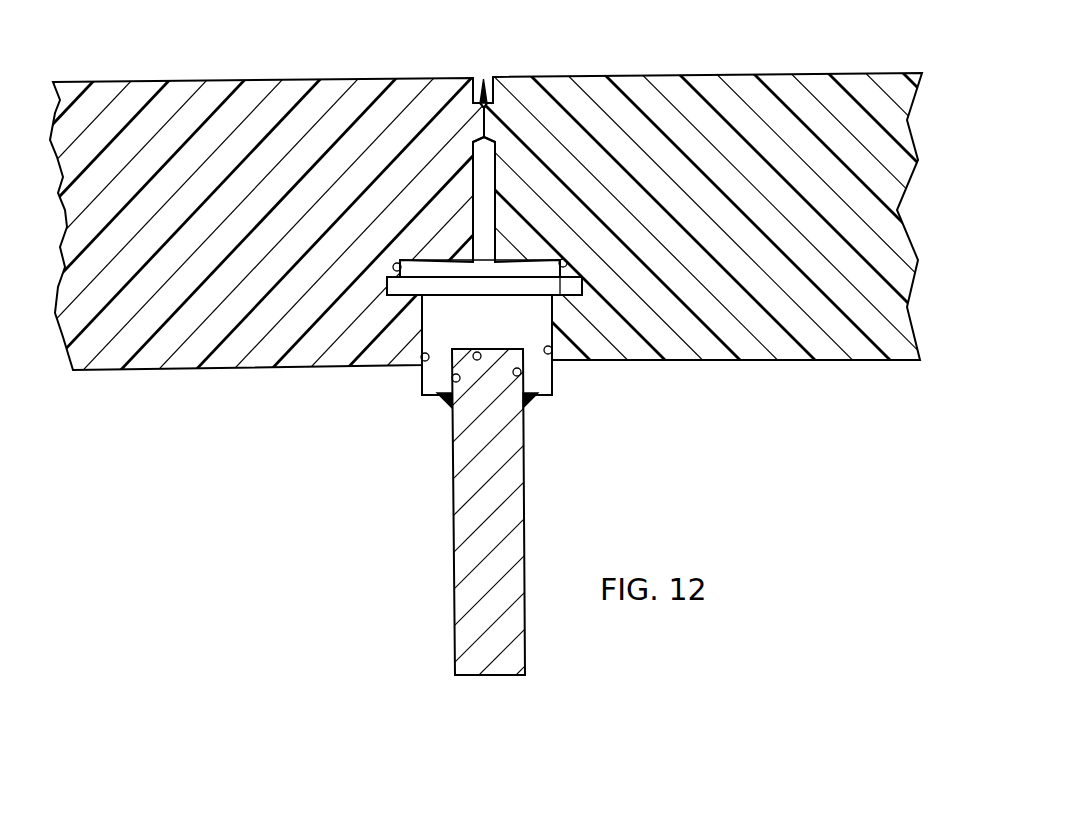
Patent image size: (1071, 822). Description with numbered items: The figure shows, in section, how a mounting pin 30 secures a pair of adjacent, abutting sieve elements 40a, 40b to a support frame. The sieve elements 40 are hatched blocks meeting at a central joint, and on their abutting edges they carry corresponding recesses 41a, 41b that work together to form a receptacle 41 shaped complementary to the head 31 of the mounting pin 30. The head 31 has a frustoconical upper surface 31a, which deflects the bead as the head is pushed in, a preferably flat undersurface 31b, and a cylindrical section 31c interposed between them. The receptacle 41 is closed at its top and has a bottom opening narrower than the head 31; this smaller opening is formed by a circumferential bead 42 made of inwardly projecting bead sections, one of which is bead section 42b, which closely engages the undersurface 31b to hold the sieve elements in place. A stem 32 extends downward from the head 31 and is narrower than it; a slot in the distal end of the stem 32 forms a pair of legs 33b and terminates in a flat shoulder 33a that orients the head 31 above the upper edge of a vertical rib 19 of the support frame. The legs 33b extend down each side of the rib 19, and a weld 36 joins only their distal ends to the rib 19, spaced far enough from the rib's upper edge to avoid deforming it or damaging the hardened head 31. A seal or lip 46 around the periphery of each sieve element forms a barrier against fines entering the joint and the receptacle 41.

The vertical rib 19 is at (496, 492).
The mounting pin 30 is at (485, 246).
The head 31 is at (491, 305).
The frustoconical upper surface 31a is at (387, 282).
The undersurface 31b is at (575, 297).
The cylindrical section 31c is at (595, 292).
The stem 32 is at (437, 396).
The shoulder 33a is at (475, 353).
The legs 33b is at (452, 381).
The weld 36 is at (450, 405).
The sieve element 40 is at (535, 200).
The sieve element 40a is at (160, 80).
The sieve element 40b is at (775, 75).
The receptacle 41 is at (488, 222).
The recess 41a is at (393, 264).
The recess 41b is at (566, 260).
The circumferential bead 42 is at (450, 367).
The bead section 42b is at (482, 386).
The seal or lip 46 is at (483, 79).